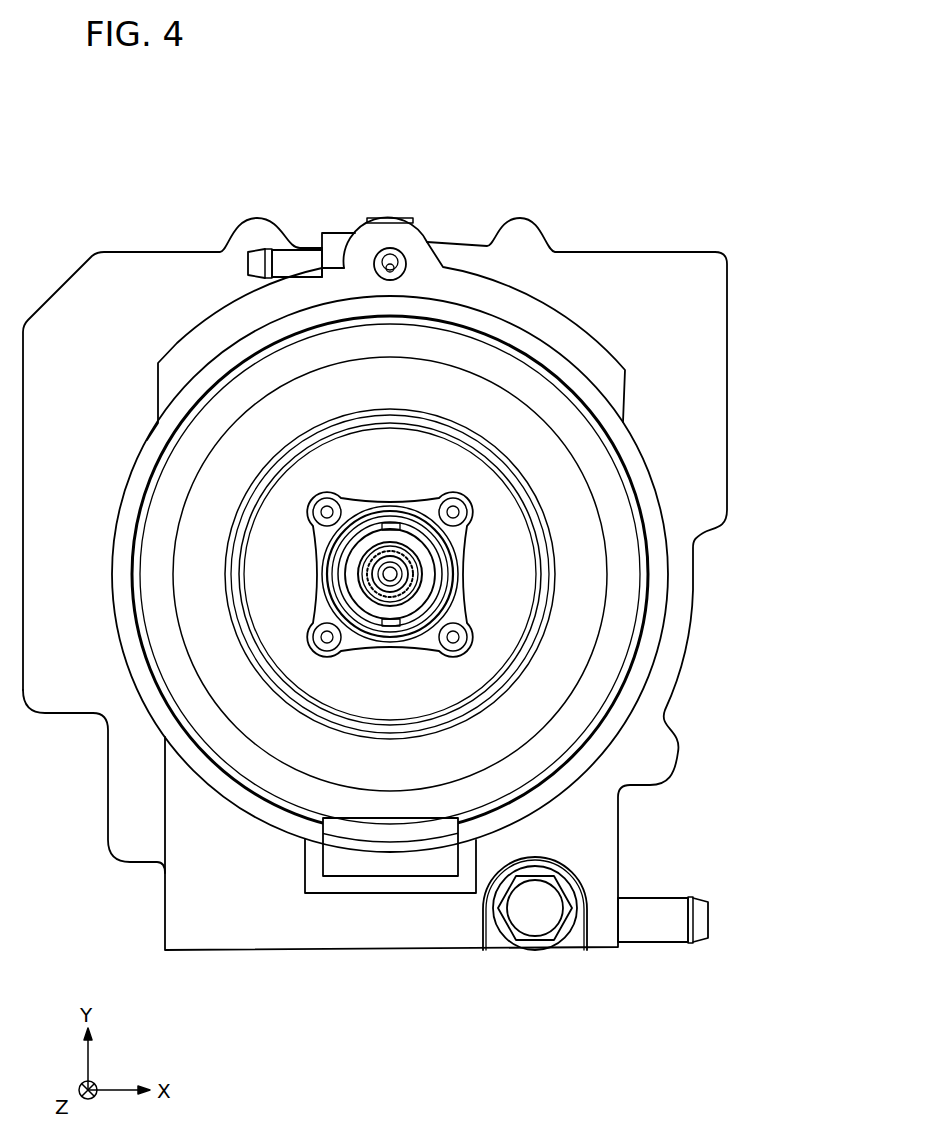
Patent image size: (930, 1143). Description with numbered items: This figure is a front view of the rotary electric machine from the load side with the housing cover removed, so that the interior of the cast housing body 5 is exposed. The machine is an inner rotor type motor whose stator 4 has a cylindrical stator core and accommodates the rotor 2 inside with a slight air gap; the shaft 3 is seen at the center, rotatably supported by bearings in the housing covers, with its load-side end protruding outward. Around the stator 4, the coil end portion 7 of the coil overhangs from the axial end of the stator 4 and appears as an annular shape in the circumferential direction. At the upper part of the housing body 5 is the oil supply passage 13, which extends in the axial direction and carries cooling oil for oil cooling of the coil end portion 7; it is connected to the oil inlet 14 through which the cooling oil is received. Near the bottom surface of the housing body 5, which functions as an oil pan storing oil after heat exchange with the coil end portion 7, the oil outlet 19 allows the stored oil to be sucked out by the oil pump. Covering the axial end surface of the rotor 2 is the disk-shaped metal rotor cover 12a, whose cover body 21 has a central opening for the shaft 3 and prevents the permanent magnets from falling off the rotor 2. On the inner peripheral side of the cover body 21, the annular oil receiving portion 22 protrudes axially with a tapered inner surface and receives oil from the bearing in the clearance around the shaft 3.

The rotor 2 is at (555, 580).
The shaft 3 is at (372, 577).
The stator 4 is at (610, 438).
The housing body 5 is at (577, 320).
The coil end portion 7 is at (522, 400).
The rotor cover 12a is at (490, 605).
The cover body 21 is at (390, 574).
The oil supply passage 13 is at (403, 258).
The oil inlet 14 is at (278, 250).
The oil outlet 19 is at (651, 947).
The oil receiving portion 22 is at (368, 535).